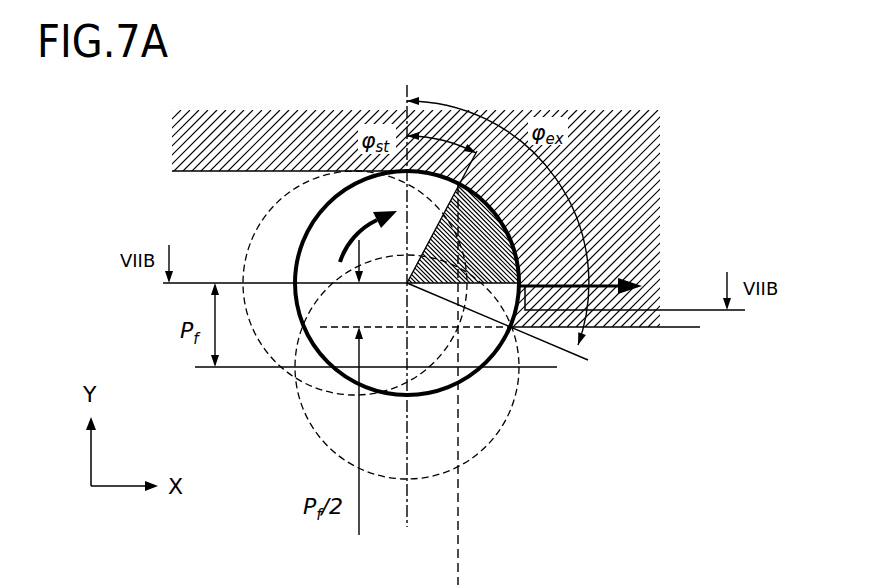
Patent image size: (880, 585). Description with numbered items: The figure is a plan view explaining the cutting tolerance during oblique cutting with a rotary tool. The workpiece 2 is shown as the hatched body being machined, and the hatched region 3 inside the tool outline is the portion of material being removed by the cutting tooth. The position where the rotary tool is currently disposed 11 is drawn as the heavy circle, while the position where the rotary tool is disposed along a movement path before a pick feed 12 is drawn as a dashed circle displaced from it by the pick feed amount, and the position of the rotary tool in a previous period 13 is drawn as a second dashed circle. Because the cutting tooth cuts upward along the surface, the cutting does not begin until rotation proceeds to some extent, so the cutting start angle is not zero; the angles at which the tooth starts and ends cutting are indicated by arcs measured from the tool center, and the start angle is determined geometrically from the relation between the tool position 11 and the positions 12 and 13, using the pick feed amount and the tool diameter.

The workpiece 2 is at (640, 162).
The cutting region (removed material) 3 is at (497, 242).
The position where the rotary tool is currently disposed 11 is at (500, 358).
The position where the rotary tool is disposed along a movement path before a pick f 12 is at (497, 431).
The position of the rotary tool in a previous period 13 is at (258, 226).